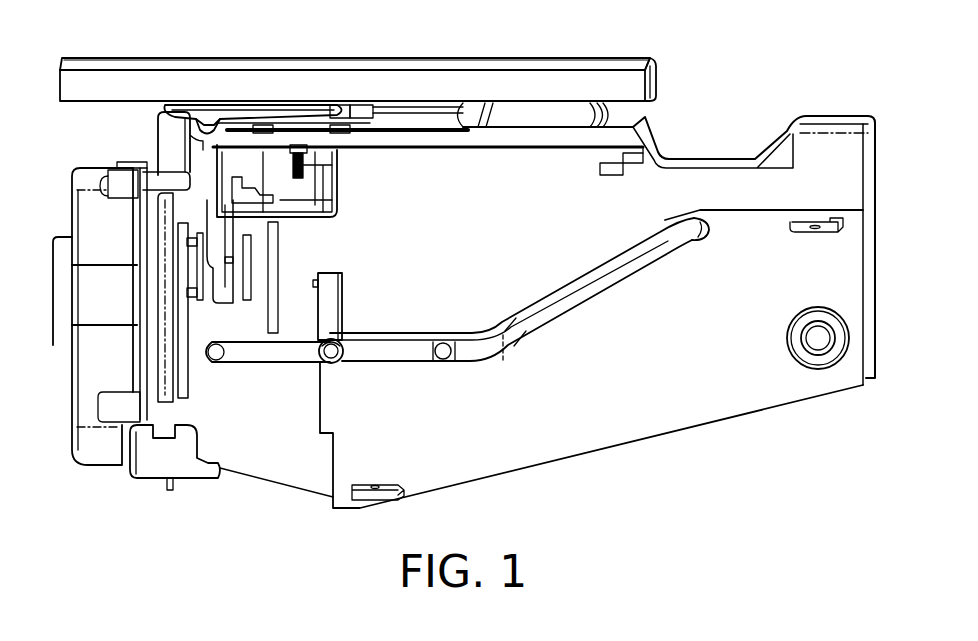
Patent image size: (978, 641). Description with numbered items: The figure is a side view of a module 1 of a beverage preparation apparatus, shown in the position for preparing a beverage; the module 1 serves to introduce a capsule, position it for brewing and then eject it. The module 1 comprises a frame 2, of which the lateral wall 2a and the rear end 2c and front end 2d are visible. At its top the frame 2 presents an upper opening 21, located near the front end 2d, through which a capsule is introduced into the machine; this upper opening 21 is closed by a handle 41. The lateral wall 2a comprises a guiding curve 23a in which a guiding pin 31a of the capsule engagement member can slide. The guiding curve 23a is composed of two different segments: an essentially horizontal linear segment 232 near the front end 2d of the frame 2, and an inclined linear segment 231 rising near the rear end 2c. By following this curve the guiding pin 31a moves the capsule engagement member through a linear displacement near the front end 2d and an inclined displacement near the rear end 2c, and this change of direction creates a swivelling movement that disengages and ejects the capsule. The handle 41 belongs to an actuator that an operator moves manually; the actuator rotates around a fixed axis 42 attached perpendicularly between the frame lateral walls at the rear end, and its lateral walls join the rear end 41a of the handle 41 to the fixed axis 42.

The module 1 is at (750, 80).
The frame 2 is at (857, 248).
The lateral wall 2a is at (683, 420).
The rear end 2c is at (873, 283).
The front end 2d is at (150, 353).
The upper opening 21 is at (257, 108).
The guiding curve 23a is at (547, 305).
The inclined linear segment 231 is at (658, 238).
The horizontal linear segment 232 is at (312, 350).
The guiding pin 31a is at (443, 358).
The handle 41 is at (385, 63).
The rear end of the actuator handle 41a is at (650, 80).
The fixed axis 42 is at (820, 336).